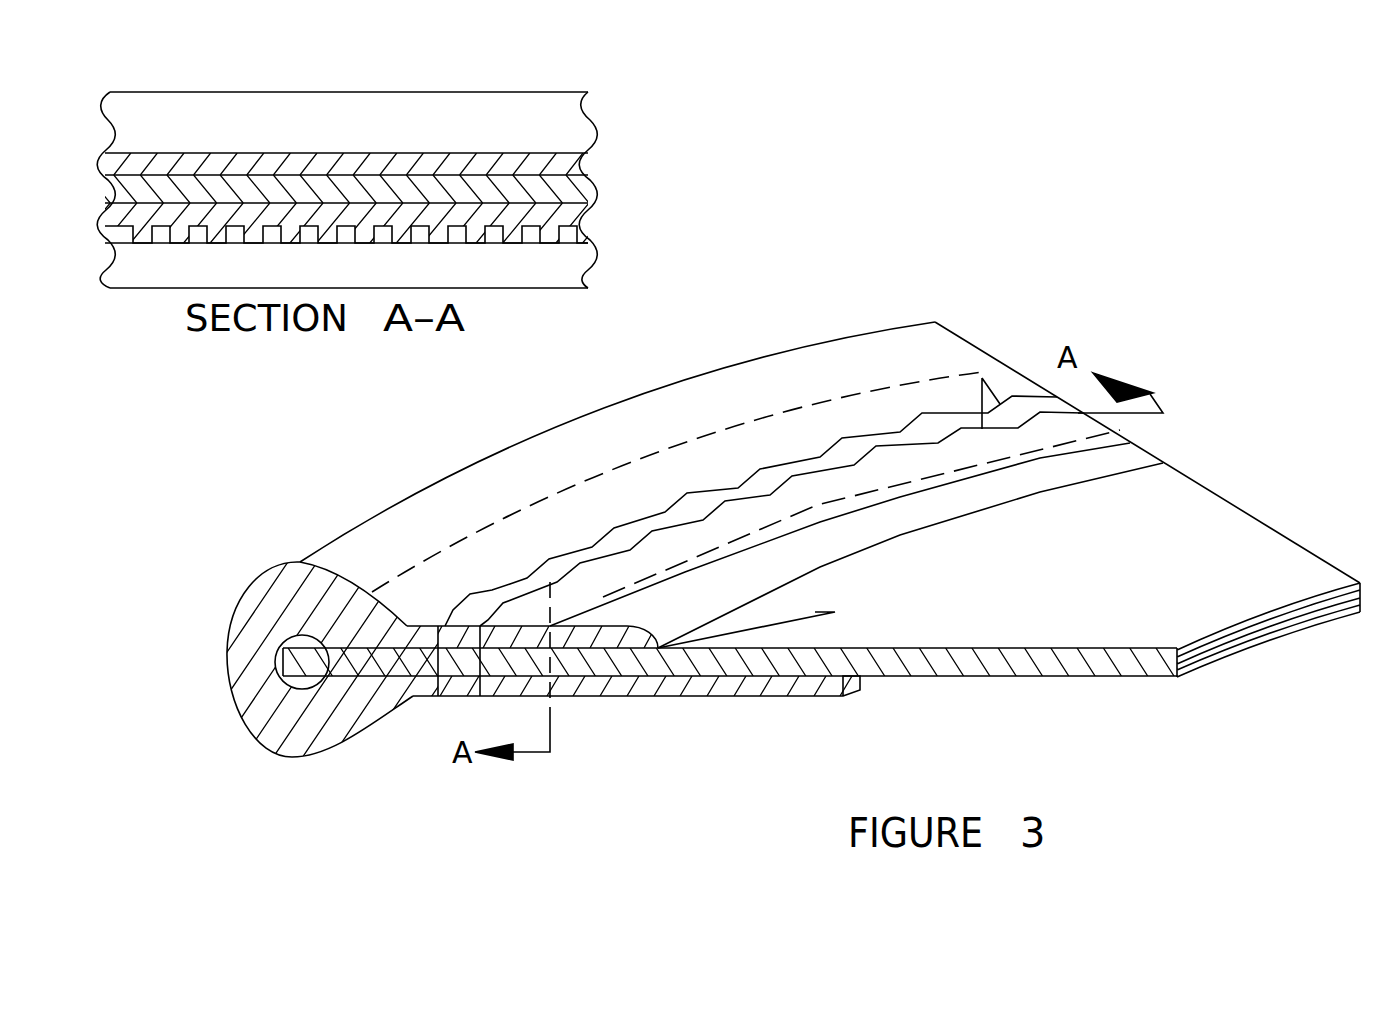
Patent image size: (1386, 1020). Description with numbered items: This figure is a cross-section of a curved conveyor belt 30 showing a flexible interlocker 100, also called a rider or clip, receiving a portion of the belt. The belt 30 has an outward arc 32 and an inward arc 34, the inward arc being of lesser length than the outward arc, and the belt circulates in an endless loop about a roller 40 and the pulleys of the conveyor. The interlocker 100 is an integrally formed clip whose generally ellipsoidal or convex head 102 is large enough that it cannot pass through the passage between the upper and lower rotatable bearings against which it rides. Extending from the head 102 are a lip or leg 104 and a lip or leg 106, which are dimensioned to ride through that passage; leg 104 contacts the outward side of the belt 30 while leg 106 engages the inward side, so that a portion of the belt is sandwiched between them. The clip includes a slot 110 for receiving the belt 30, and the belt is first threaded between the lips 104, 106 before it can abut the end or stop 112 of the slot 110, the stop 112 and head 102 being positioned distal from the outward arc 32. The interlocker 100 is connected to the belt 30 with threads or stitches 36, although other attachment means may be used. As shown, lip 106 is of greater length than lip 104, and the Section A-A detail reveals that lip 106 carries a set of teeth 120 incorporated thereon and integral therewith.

The conveyor belt 30 is at (1262, 522).
The outward arc 32 is at (873, 390).
The inward arc 34 is at (1268, 642).
The threads or stitches 36 is at (982, 378).
The roller 40 is at (302, 480).
The flexible interlocker 100 is at (275, 563).
The head 102 is at (277, 750).
The lip or leg 104 is at (457, 626).
The lip or leg 106 is at (468, 510).
The slot 110 is at (835, 612).
The end or stop 112 is at (283, 648).
The teeth 120 is at (364, 243).